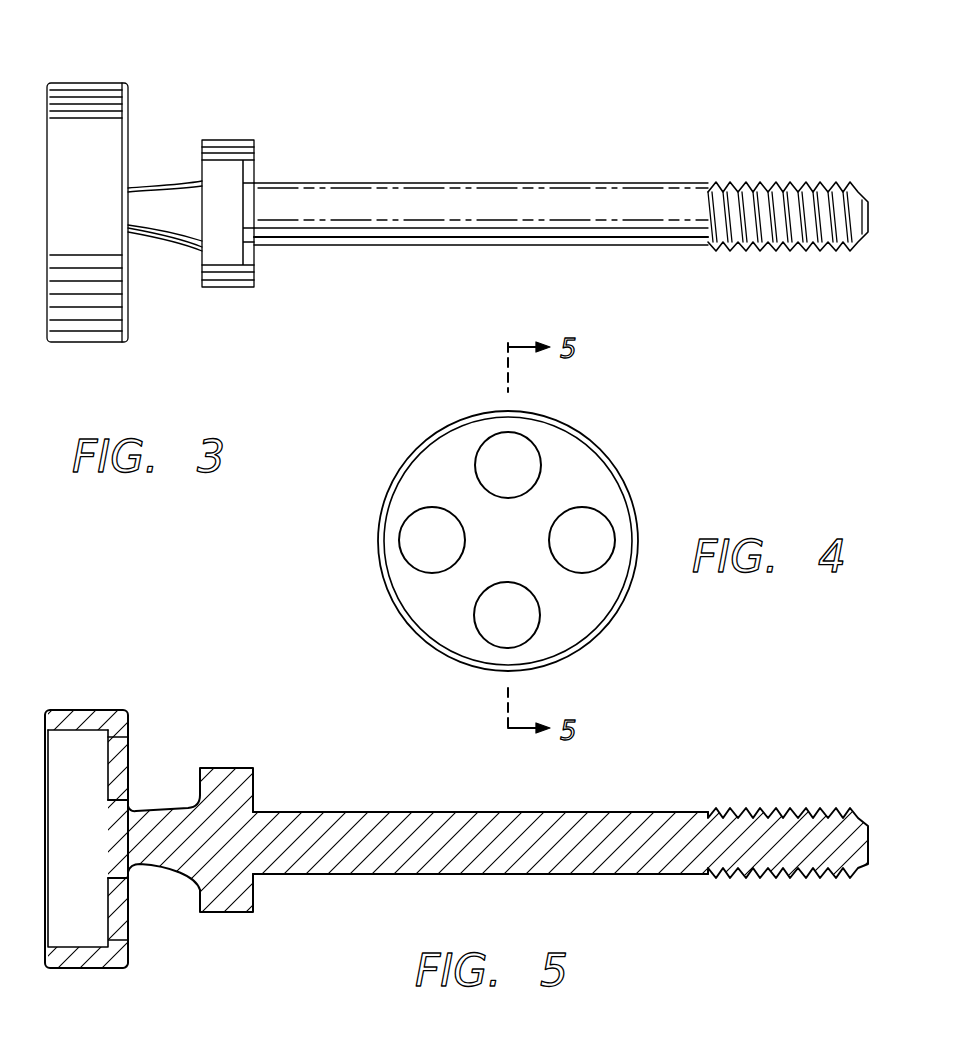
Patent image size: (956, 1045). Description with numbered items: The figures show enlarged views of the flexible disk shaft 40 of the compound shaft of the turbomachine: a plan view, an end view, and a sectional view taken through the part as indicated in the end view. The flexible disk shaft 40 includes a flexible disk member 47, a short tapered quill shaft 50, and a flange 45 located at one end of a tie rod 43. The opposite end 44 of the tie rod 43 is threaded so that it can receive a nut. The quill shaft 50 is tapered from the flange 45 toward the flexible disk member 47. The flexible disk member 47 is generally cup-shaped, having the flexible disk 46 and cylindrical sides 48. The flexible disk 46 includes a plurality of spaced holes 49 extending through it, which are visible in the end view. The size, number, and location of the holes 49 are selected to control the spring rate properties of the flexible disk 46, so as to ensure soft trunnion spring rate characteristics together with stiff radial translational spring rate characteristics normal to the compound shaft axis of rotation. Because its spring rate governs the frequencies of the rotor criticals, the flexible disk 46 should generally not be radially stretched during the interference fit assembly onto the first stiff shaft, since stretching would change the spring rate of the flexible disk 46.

In FIG. 3, the flexible disk shaft 40 is at (336, 148).
In FIG. 5, the flexible disk shaft 40 is at (300, 788).
In FIG. 3, the tie rod 43 is at (547, 183).
In FIG. 5, the tie rod 43 is at (385, 875).
In FIG. 3, the opposite end of the tie rod 44 is at (770, 250).
In FIG. 5, the opposite end of the tie rod 44 is at (770, 878).
In FIG. 3, the flange 45 is at (232, 140).
In FIG. 5, the flange 45 is at (228, 768).
In FIG. 3, the flexible disk 46 is at (128, 318).
In FIG. 4, the flexible disk 46 is at (425, 590).
In FIG. 5, the flexible disk 46 is at (128, 935).
In FIG. 3, the flexible disk member 47 is at (143, 103).
In FIG. 5, the flexible disk member 47 is at (152, 745).
In FIG. 3, the cylindrical sides 48 is at (93, 84).
In FIG. 4, the cylindrical sides 48 is at (428, 440).
In FIG. 5, the cylindrical sides 48 is at (68, 710).
In FIG. 4, the spaced holes 49 is at (588, 558).
In FIG. 3, the short tapered quill shaft 50 is at (175, 242).
In FIG. 5, the short tapered quill shaft 50 is at (167, 872).